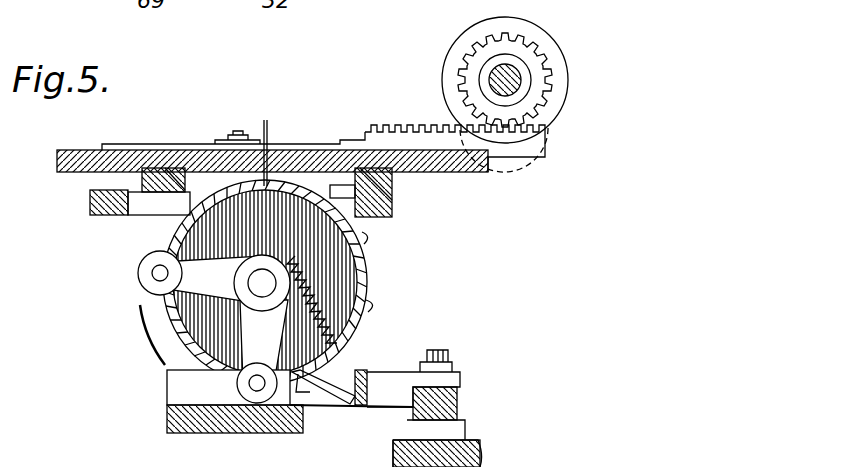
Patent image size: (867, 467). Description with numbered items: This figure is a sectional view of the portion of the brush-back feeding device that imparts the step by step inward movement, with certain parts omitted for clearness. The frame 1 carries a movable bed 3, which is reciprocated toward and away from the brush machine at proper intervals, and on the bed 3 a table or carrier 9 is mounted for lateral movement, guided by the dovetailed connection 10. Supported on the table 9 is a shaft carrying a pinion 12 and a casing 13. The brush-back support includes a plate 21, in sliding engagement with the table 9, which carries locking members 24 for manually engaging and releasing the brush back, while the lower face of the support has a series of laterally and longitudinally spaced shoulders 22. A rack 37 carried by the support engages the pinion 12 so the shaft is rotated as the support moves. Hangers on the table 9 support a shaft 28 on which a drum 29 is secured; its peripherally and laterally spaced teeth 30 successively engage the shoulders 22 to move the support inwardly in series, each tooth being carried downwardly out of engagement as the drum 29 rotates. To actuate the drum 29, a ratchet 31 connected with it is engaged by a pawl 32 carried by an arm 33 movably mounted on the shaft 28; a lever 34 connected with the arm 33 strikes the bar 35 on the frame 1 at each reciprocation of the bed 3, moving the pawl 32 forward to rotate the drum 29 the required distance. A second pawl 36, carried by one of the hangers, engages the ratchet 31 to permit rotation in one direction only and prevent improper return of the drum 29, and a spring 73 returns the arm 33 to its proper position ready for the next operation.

The frame 1 is at (90, 203).
The movable bed 3 is at (393, 196).
The table or carrier 9 is at (86, 150).
The dovetailed connection 10 is at (162, 198).
The pinion 12 is at (532, 75).
The casing 13 is at (537, 35).
The plate 21 is at (298, 145).
The engaging means or shoulders 22 is at (277, 142).
The locking members 24 is at (230, 138).
The shaft 28 is at (262, 283).
The drum 29 is at (195, 312).
The teeth 30 is at (160, 300).
The ratchet 31 is at (366, 283).
The pawl 32 is at (257, 392).
The arm 33 is at (264, 341).
The lever 34 is at (320, 400).
The bar 35 is at (368, 374).
The pawl 36 is at (152, 273).
The rack 37 is at (394, 125).
The spring 73 is at (332, 322).